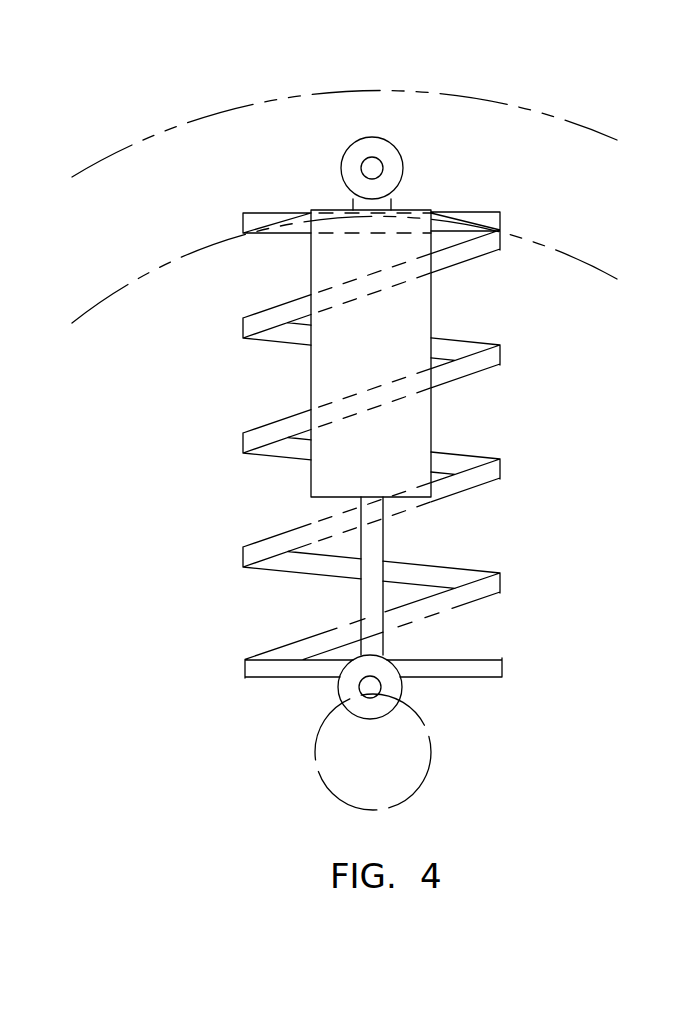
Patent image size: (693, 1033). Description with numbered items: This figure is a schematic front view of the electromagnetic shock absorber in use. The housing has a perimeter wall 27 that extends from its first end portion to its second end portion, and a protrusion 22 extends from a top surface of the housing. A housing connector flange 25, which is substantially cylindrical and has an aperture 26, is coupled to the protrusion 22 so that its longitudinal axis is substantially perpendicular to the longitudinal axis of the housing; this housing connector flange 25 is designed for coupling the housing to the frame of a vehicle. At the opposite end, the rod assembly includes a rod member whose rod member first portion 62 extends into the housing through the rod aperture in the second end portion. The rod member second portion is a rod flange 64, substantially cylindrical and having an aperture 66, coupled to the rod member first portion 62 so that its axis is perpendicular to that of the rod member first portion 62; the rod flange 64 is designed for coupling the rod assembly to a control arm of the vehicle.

The protrusion 22 is at (392, 199).
The housing connector flange 25 is at (401, 178).
The aperture 26 is at (392, 162).
The perimeter wall 27 is at (431, 324).
The rod member first portion 62 is at (383, 641).
The rod flange 64 is at (402, 693).
The aperture 66 is at (350, 692).